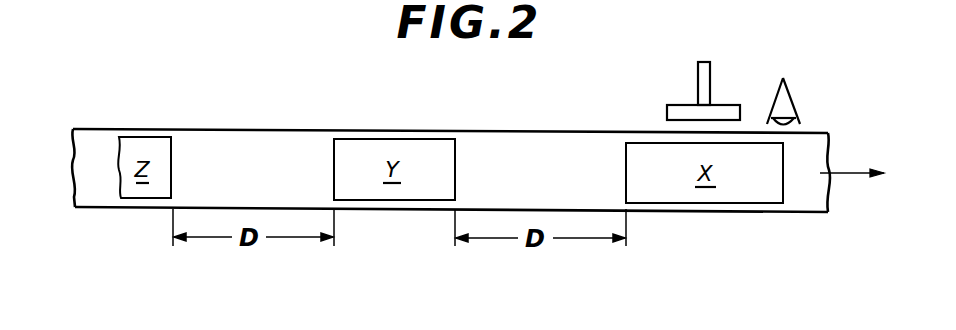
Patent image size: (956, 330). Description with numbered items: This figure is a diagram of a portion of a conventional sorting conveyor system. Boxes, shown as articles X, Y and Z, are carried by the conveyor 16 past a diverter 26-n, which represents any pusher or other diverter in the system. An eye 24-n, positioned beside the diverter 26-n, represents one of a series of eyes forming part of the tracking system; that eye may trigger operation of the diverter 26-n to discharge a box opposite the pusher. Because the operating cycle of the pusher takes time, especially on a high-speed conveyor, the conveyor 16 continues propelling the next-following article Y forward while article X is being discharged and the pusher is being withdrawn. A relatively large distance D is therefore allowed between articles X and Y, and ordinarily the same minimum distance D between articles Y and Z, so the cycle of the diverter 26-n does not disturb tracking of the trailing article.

The conveyor 16 is at (237, 137).
The diverter 26-n is at (698, 90).
The eye 24-n is at (793, 100).